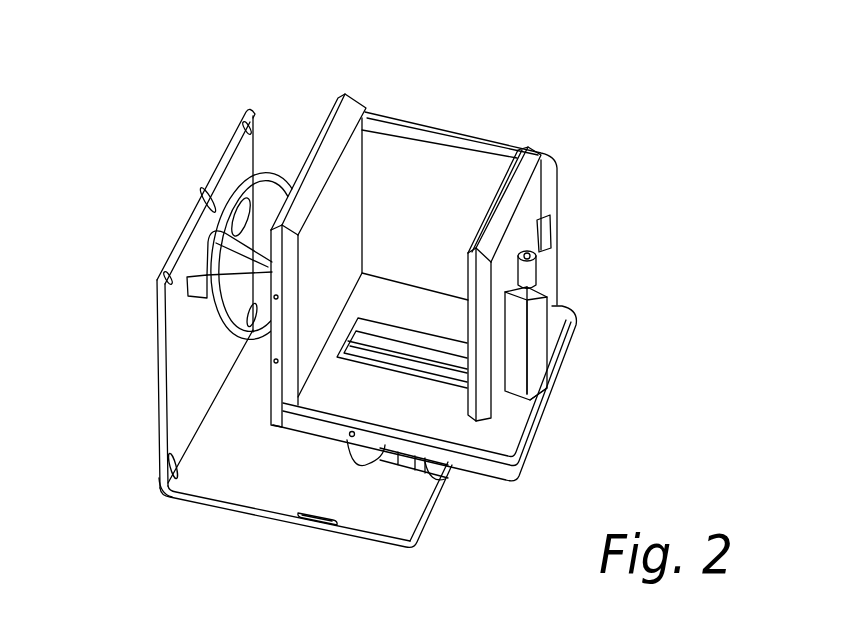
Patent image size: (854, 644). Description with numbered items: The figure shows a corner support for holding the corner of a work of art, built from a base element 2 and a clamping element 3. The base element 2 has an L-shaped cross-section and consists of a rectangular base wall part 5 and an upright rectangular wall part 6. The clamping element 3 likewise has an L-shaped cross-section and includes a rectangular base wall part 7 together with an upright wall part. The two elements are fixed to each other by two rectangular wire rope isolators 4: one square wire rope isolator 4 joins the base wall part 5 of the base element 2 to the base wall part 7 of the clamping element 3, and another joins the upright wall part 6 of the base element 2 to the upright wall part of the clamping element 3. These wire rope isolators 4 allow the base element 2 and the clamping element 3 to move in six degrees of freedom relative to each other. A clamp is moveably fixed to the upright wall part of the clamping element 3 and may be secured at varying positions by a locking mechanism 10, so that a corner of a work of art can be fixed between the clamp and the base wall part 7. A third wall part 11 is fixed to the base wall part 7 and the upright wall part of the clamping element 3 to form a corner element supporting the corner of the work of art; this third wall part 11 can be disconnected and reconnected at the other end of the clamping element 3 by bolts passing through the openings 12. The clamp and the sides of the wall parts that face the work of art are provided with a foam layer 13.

The base element 2 is at (288, 522).
The clamping element 3 is at (510, 466).
The wire rope isolators 4 is at (273, 173).
The base wall part 5 is at (164, 426).
The upright wall part 6 is at (195, 499).
The base wall part 7 is at (342, 93).
The locking mechanism 10 is at (535, 267).
The third wall part 11 is at (457, 130).
The openings 12 is at (273, 361).
The foam layer 13 is at (363, 108).